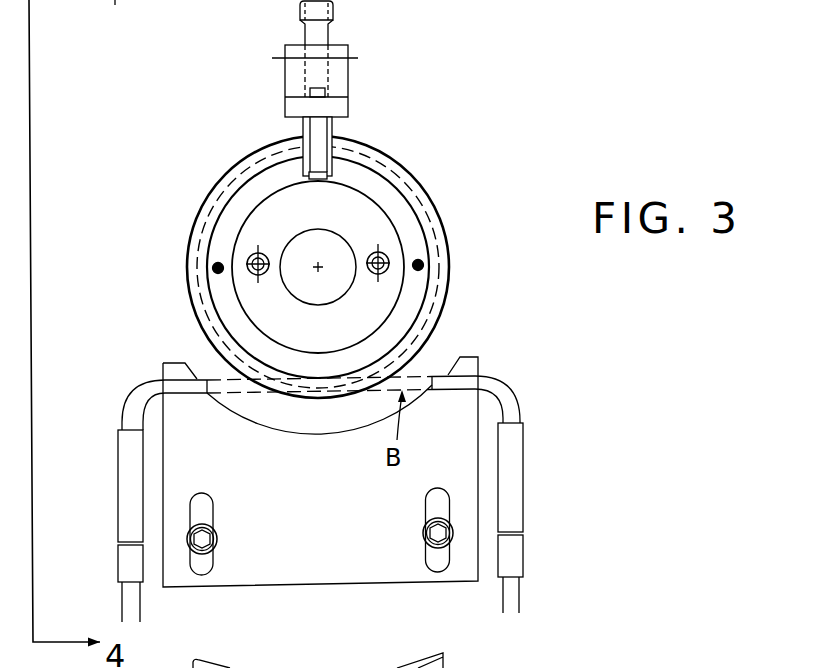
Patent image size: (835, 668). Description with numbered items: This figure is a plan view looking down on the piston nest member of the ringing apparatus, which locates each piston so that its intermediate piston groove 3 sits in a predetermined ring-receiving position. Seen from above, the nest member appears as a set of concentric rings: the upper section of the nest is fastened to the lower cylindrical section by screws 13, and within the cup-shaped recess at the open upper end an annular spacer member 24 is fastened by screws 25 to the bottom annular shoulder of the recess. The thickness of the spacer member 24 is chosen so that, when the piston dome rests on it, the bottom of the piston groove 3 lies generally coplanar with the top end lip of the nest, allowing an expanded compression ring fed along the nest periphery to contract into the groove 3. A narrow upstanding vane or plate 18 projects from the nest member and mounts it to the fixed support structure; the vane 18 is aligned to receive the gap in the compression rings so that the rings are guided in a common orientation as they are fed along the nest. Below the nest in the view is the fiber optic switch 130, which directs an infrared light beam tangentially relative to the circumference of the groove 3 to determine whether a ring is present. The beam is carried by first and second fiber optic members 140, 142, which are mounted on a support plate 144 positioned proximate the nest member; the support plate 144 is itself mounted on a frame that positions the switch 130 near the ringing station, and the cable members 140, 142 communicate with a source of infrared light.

The piston groove 3 is at (445, 313).
The screws 13 is at (250, 280).
The vane or plate 18 is at (296, 128).
The annular spacer member 24 is at (228, 223).
The screws 25 is at (217, 276).
The fiber optic switch 130 is at (530, 446).
The first fiber optic member 140 is at (500, 390).
The second fiber optic member 142 is at (146, 389).
The support plate 144 is at (350, 566).